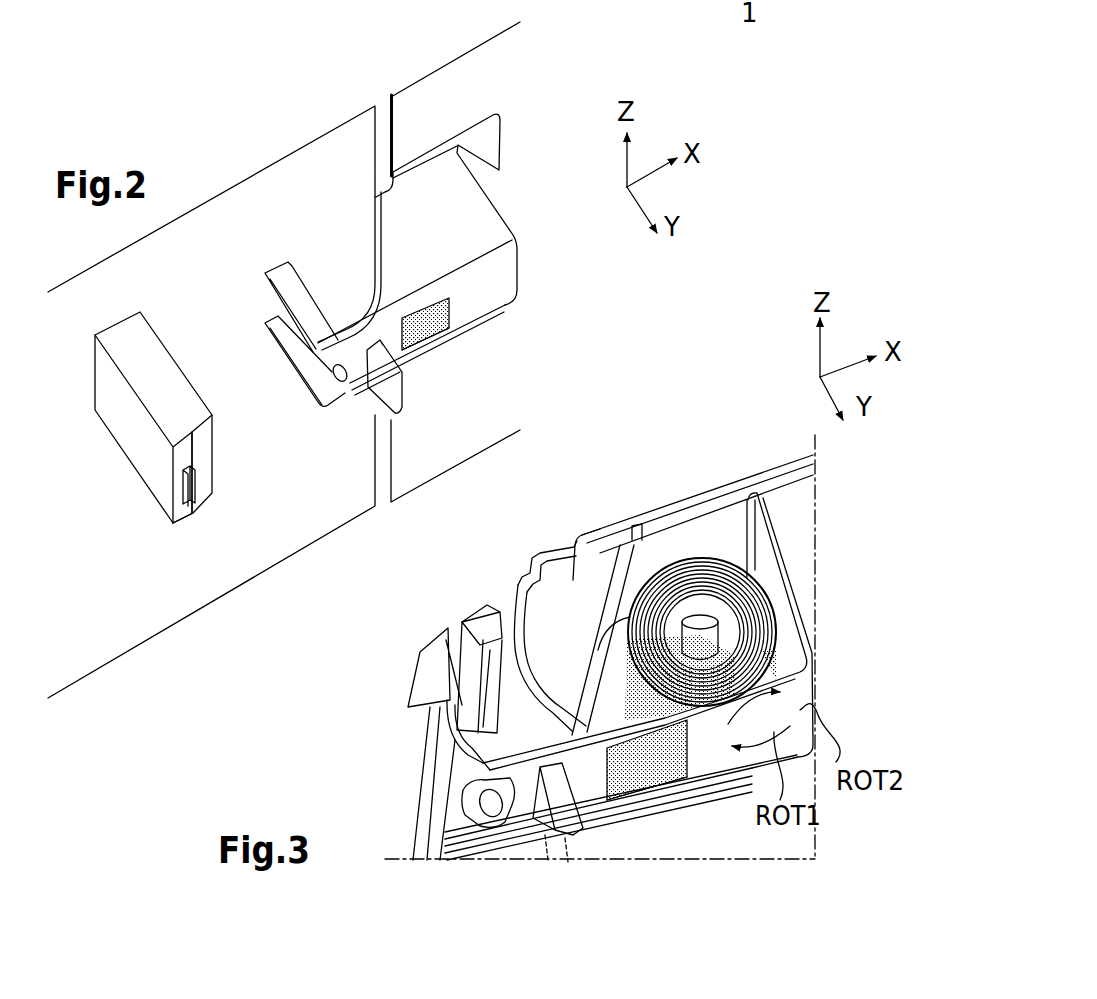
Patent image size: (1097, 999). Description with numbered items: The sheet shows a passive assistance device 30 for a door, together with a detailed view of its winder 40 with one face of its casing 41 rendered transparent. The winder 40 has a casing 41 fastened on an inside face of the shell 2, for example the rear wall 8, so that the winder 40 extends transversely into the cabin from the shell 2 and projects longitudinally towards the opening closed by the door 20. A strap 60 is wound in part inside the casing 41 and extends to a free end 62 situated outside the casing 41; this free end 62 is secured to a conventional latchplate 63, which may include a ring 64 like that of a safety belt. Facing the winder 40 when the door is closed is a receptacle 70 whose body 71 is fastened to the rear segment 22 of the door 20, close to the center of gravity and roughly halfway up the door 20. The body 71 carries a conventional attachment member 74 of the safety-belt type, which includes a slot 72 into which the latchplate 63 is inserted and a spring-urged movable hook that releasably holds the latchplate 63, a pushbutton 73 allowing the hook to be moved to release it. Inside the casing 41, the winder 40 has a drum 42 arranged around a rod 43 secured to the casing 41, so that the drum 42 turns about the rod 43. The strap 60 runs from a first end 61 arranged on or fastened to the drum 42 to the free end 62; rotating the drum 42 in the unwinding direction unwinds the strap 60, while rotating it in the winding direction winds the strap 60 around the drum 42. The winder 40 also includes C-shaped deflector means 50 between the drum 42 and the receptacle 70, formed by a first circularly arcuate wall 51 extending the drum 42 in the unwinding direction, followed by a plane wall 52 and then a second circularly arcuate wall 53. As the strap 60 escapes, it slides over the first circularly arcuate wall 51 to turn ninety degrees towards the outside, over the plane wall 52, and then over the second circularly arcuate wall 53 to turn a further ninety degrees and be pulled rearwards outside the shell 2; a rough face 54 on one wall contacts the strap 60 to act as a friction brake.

In FIG. 2, the shell 2 is at (455, 62).
In FIG. 3, the shell 2 is at (610, 524).
In FIG. 2, the rear wall 8 is at (437, 100).
In FIG. 3, the rear wall 8 is at (591, 532).
In FIG. 2, the door 20 is at (323, 134).
In FIG. 2, the rear segment 22 is at (333, 213).
In FIG. 2, the assistance device 30 is at (535, 373).
In FIG. 2, the winder 40 is at (447, 299).
In FIG. 3, the winder 40 is at (642, 642).
In FIG. 2, the casing 41 is at (482, 218).
In FIG. 3, the casing 41 is at (758, 528).
In FIG. 2, the drum 42 is at (415, 315).
In FIG. 3, the drum 42 is at (778, 570).
In FIG. 3, the rod 43 is at (703, 630).
In FIG. 3, the deflector means 50 is at (401, 718).
In FIG. 3, the first circularly arcuate wall 51 is at (435, 791).
In FIG. 3, the plane wall 52 is at (479, 677).
In FIG. 3, the second circularly arcuate wall 53 is at (432, 642).
In FIG. 3, the rough face 54 is at (432, 740).
In FIG. 2, the strap 60 is at (457, 327).
In FIG. 3, the strap 60 is at (750, 768).
In FIG. 3, the first end 61 is at (700, 617).
In FIG. 2, the free end 62 is at (428, 352).
In FIG. 3, the free end 62 is at (620, 768).
In FIG. 2, the latchplate 63 is at (368, 408).
In FIG. 3, the latchplate 63 is at (530, 820).
In FIG. 2, the ring 64 is at (337, 385).
In FIG. 3, the ring 64 is at (486, 820).
In FIG. 2, the receptacle 70 is at (152, 445).
In FIG. 2, the body 71 is at (108, 372).
In FIG. 2, the slot 72 is at (192, 450).
In FIG. 2, the pushbutton 73 is at (185, 522).
In FIG. 2, the attachment member 74 is at (165, 473).